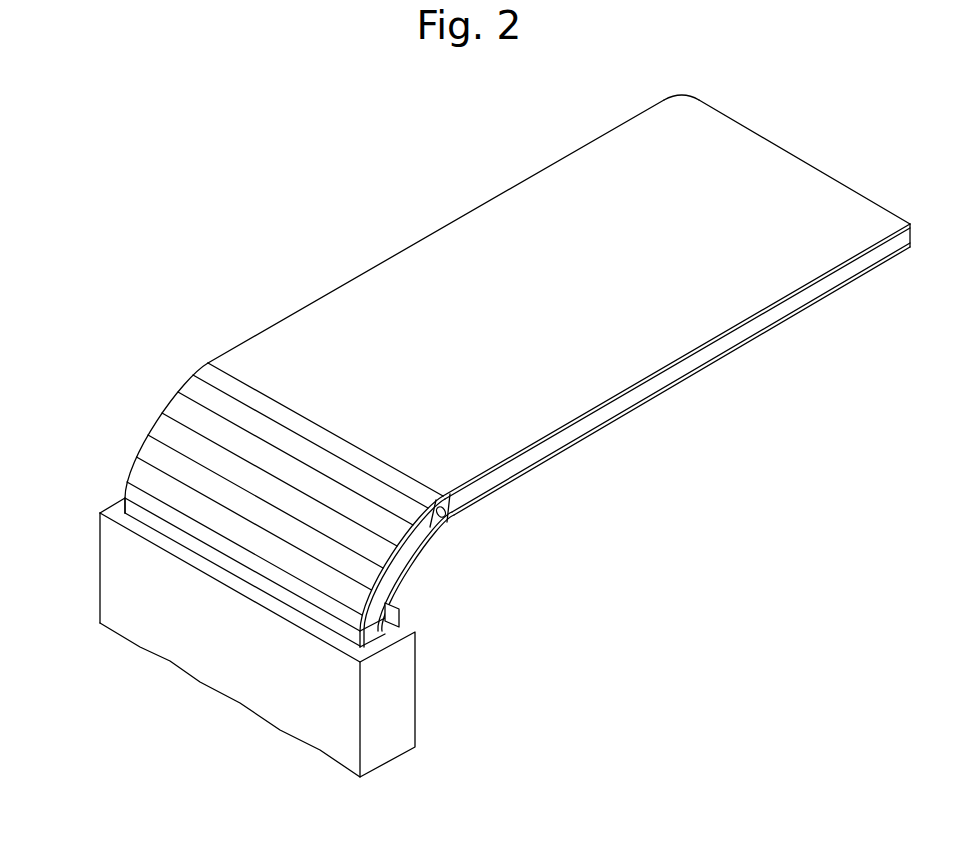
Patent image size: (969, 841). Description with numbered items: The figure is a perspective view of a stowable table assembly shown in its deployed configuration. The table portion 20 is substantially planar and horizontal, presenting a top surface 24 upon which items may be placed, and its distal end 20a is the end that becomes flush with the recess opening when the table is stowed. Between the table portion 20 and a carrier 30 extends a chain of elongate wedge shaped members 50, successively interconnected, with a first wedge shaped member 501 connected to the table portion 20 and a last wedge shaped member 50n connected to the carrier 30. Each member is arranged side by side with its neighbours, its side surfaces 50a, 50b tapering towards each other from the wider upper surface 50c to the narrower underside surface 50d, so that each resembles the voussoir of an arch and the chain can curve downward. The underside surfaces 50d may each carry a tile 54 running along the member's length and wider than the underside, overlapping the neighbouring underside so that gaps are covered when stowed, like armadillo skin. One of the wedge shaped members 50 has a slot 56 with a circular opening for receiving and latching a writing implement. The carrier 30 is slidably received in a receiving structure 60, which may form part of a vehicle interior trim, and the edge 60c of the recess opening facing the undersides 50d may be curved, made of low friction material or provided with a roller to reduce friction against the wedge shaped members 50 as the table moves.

The table portion 20 is at (559, 290).
The distal end of the table portion 20a is at (828, 172).
The top surface 24 is at (735, 140).
The elongate wedge shaped members 50 is at (319, 466).
The first wedge shaped member 501 is at (208, 366).
The upper surface of the wedge shaped member 50c is at (159, 424).
The last wedge shaped member 50n is at (134, 487).
The side surface 50a is at (397, 590).
The side surface 50b is at (392, 577).
The underside surface of the wedge shaped member 50d is at (437, 531).
The tile 54 is at (432, 544).
The slot 56 is at (455, 499).
The carrier 30 is at (372, 633).
The receiving structure 60 is at (289, 646).
The edge of the recess opening 60c is at (397, 628).